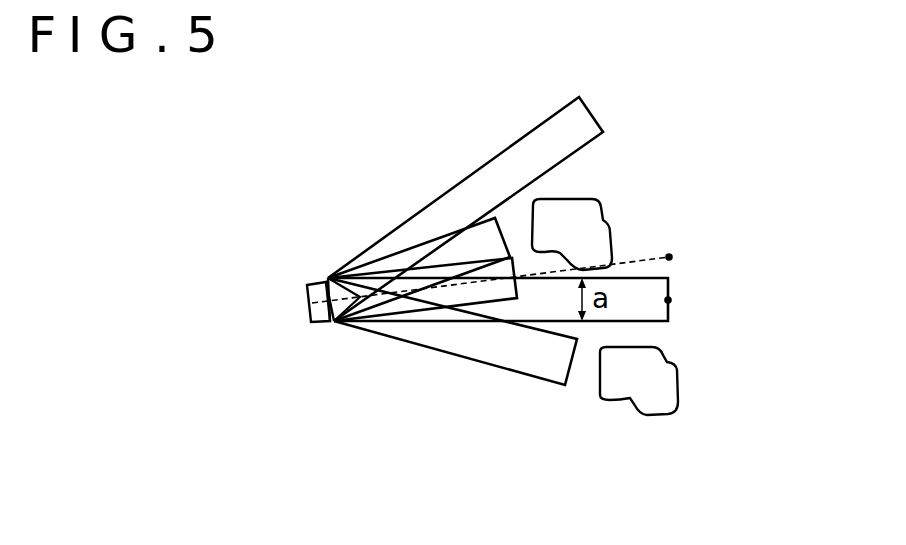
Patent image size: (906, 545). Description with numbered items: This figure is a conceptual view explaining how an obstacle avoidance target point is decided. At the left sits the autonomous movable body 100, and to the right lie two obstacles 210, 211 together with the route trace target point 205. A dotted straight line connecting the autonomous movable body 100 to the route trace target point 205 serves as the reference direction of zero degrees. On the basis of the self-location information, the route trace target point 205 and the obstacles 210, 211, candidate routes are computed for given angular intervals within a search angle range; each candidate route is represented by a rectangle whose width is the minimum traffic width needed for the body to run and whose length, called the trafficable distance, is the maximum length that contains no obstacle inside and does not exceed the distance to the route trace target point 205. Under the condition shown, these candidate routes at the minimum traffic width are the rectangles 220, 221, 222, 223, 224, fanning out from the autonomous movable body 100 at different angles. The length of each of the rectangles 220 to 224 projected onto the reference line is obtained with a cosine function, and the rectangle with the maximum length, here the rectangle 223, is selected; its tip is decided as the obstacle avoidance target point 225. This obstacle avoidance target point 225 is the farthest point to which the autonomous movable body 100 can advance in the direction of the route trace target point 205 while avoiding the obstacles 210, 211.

The autonomous movable body 100 is at (307, 303).
The route trace target point 205 is at (673, 257).
The obstacle 210 is at (596, 203).
The obstacle 211 is at (680, 390).
The rectangle 220 is at (596, 113).
The rectangle 221 is at (390, 254).
The rectangle 222 is at (457, 262).
The rectangle 223 is at (668, 321).
The rectangle 224 is at (447, 352).
The obstacle avoidance target point 225 is at (672, 300).